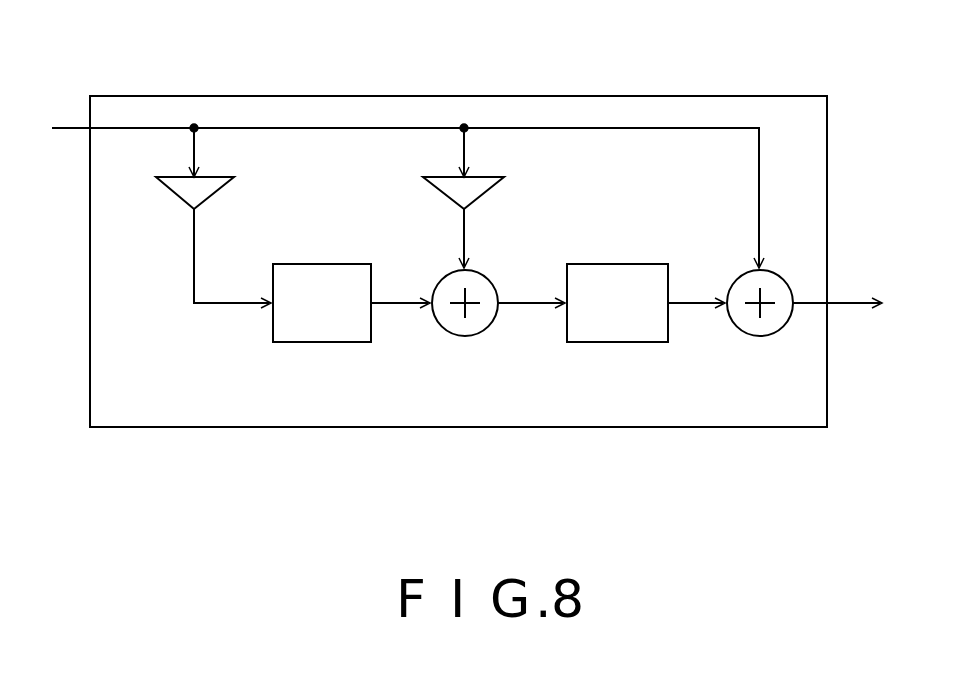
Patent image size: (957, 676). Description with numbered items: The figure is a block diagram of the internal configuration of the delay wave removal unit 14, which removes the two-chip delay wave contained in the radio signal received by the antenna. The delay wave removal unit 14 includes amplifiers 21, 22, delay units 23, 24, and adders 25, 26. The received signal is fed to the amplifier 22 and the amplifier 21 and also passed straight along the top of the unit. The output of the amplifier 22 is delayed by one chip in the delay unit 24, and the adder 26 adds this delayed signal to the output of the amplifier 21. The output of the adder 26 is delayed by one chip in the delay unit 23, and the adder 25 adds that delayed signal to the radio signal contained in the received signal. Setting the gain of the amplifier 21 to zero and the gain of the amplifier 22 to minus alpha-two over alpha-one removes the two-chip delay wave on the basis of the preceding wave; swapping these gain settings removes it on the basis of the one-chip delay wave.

The delay wave removal unit 14 is at (551, 96).
The amplifier 21 is at (437, 188).
The amplifier 22 is at (170, 193).
The delay unit 23 is at (620, 343).
The delay unit 24 is at (322, 343).
The adder 25 is at (760, 337).
The adder 26 is at (467, 337).